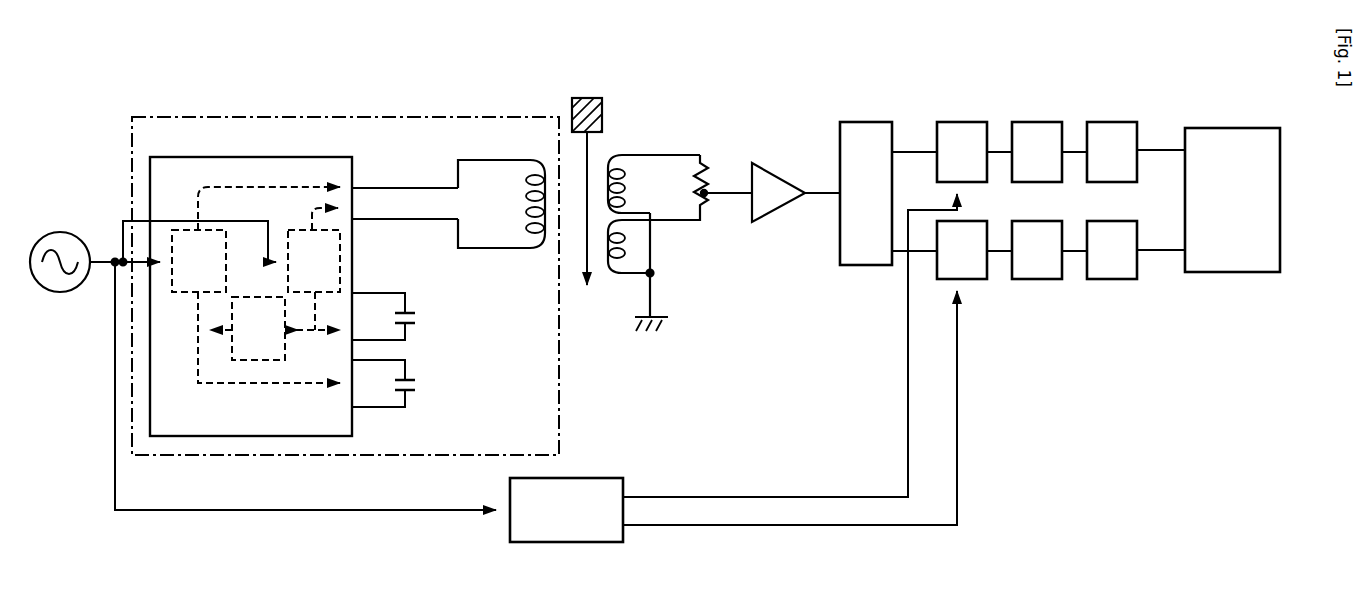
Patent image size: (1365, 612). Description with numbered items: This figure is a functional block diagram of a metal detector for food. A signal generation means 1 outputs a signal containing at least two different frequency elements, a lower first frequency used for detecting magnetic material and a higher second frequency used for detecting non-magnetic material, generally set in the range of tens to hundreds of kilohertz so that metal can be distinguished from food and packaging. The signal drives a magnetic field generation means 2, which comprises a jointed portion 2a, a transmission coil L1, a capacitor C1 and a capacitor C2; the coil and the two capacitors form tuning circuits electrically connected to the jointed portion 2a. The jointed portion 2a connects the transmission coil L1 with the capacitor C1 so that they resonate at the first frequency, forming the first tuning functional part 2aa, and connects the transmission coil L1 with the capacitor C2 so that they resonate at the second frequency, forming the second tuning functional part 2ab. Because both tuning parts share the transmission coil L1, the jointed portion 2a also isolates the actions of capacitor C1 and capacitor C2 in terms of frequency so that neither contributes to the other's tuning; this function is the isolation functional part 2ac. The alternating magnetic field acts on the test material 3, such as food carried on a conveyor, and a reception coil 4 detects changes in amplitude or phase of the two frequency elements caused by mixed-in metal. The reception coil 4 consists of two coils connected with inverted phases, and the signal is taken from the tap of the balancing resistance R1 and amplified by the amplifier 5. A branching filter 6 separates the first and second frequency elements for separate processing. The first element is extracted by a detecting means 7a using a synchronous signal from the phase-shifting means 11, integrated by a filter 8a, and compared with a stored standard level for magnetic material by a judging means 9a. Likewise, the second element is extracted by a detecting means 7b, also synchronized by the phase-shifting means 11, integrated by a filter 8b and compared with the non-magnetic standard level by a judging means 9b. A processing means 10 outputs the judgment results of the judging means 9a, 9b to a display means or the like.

The signal generation means 1 is at (60, 232).
The magnetic field generation means 2 is at (207, 117).
The jointed portion 2a is at (305, 157).
The F1 tuning functional part 2aa is at (314, 261).
The F2 tuning functional part 2ab is at (199, 261).
The isolation functional part 2ac is at (258, 328).
The transmission coil L1 is at (501, 189).
The capacitor C1 is at (403, 316).
The capacitor C2 is at (403, 383).
The test material 3 is at (587, 98).
The reception coil 4 is at (662, 155).
The resistance R1 is at (706, 199).
The amplifier 5 is at (778, 168).
The branching filter 6 is at (868, 122).
The detecting means 7a is at (975, 122).
The detecting means 7b is at (975, 279).
The filter 8a is at (1043, 122).
The filter 8b is at (1043, 279).
The judging means 9a is at (1113, 122).
The judging means 9b is at (1115, 279).
The processing means 10 is at (1232, 128).
The phase-shifting means 11 is at (603, 478).